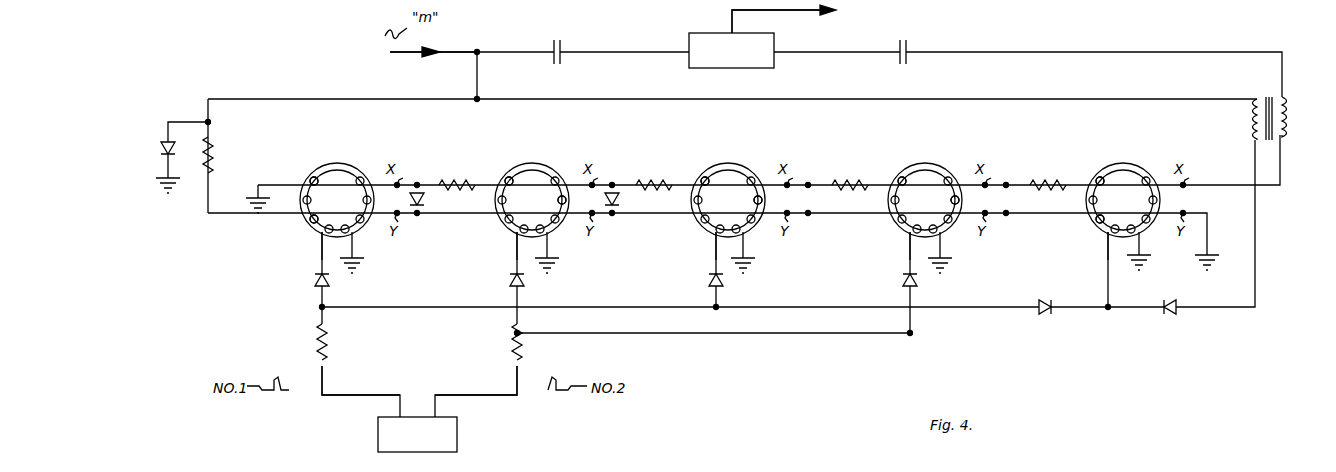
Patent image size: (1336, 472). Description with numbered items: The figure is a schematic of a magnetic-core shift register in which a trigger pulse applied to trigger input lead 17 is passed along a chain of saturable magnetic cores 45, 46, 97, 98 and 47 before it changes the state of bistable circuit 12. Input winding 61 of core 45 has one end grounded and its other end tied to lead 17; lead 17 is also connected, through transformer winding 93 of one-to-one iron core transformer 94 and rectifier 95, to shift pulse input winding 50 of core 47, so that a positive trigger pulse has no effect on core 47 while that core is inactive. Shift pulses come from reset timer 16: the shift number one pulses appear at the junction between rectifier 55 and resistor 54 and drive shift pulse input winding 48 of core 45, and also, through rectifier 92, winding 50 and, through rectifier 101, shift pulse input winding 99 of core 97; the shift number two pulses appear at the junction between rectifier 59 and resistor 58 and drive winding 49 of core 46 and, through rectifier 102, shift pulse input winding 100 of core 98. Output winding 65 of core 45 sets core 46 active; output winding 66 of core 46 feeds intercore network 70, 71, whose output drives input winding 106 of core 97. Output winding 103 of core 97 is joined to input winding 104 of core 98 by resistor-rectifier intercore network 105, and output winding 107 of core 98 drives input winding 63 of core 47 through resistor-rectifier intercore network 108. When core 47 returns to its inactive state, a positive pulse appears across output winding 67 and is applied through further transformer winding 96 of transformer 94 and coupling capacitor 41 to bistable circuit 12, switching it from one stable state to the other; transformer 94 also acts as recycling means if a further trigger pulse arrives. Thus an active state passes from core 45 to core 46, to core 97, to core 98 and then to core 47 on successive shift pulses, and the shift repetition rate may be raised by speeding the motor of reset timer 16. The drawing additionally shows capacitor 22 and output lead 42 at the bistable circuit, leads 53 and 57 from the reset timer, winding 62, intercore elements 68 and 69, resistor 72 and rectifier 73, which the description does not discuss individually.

The bistable circuit 12 is at (688, 42).
The reset timer 16 is at (378, 441).
The trigger input lead 17 is at (470, 49).
The capacitor 22 is at (560, 58).
The coupling capacitor 41 is at (907, 58).
The output line 42 is at (815, 10).
The magnetic core 45 is at (338, 170).
The magnetic core 46 is at (538, 172).
The magnetic core 47 is at (1132, 172).
The shift pulse input winding 48 is at (312, 236).
The shift pulse input winding 49 is at (507, 236).
The shift pulse input winding 50 is at (1104, 230).
The lead 53 is at (358, 398).
The resistor 54 is at (328, 362).
The rectifier 55 is at (306, 283).
The lead 57 is at (466, 396).
The resistor 58 is at (512, 362).
The rectifier 59 is at (500, 283).
The input winding 61 is at (318, 186).
The tube electrode 62 is at (512, 178).
The input winding 63 is at (1104, 206).
The output winding 65 is at (350, 214).
The output winding 66 is at (554, 196).
The output winding 67 is at (1146, 188).
The resistor 68 is at (456, 180).
The diode 69 is at (434, 198).
The intercore network 70 is at (656, 180).
The intercore network 71 is at (628, 198).
The resistor 72 is at (212, 146).
The diode 73 is at (158, 146).
The rectifier 92 is at (1030, 318).
The transformer winding 93 is at (1252, 126).
The iron core transformer 94 is at (1270, 92).
The rectifier 95 is at (1166, 316).
The transformer winding 96 is at (1286, 126).
The saturable magnetic core 97 is at (752, 172).
The saturable magnetic core 98 is at (948, 172).
The shift pulse input winding 99 is at (714, 240).
The shift pulse input winding 100 is at (908, 240).
The rectifier 101 is at (700, 283).
The rectifier 102 is at (896, 283).
The output winding 103 is at (748, 200).
The input winding 104 is at (910, 178).
The resistor-rectifier intercore network 105 is at (838, 180).
The input winding 106 is at (714, 178).
The output winding 107 is at (944, 200).
The resistor-rectifier intercore network 108 is at (1040, 180).